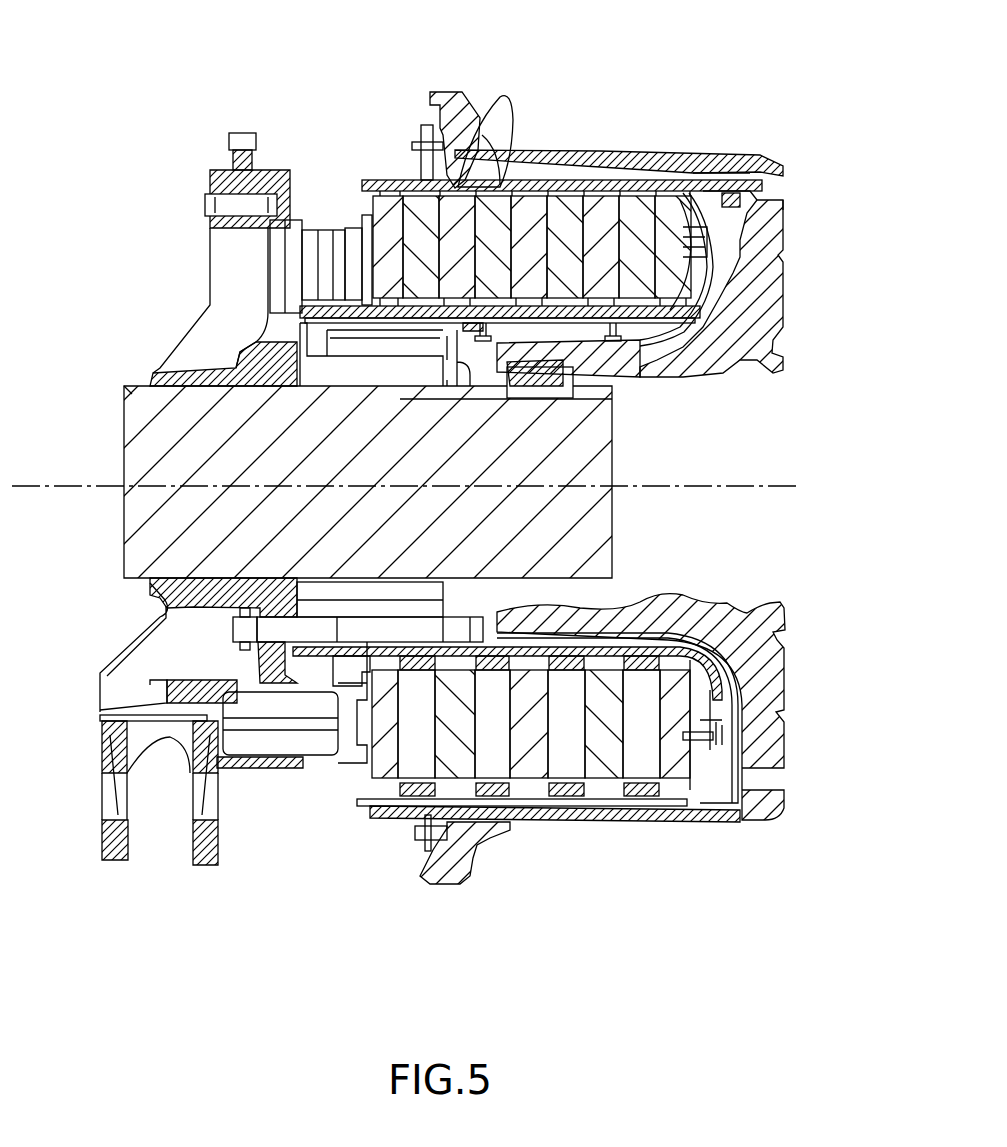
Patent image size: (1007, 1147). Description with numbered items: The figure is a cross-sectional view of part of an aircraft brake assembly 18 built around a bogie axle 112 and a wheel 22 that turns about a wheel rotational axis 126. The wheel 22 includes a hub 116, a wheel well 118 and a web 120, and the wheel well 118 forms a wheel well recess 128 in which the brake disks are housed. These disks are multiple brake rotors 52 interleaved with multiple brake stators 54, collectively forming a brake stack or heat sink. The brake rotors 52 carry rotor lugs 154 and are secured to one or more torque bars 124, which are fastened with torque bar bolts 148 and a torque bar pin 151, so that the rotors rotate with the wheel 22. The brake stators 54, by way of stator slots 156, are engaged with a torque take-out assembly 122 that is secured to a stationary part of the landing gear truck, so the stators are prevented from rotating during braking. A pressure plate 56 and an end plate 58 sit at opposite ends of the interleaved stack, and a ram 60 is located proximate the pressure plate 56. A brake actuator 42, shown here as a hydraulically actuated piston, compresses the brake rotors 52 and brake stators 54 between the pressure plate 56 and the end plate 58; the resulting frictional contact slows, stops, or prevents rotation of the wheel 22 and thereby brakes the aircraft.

The brake assembly 18 is at (790, 100).
The wheel 22 is at (641, 134).
The brake actuator 42 is at (273, 792).
The brake rotors 52 is at (409, 263).
The brake stators 54 is at (445, 263).
The pressure plate 56 is at (376, 263).
The end plate 58 is at (661, 263).
The ram 60 is at (363, 227).
The bogie axle 112 is at (104, 440).
The hub 116 is at (585, 352).
The wheel well 118 is at (770, 168).
The web 120 is at (770, 692).
The torque take-out assembly 122 is at (412, 338).
The torque bars 124 is at (372, 181).
The wheel rotational axis 126 is at (684, 486).
The wheel well recess 128 is at (727, 247).
The torque bar bolts 148 is at (428, 155).
The torque bar pin 151 is at (730, 203).
The rotor lugs 154 is at (500, 112).
The stator slots 156 is at (463, 331).